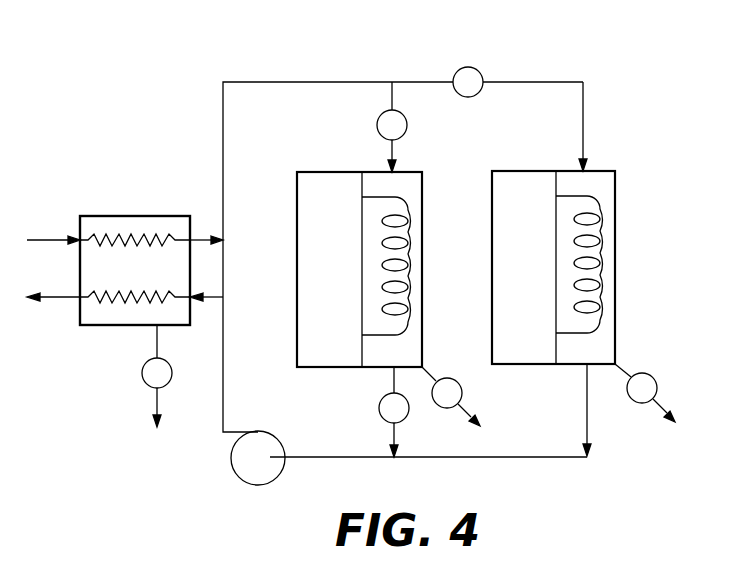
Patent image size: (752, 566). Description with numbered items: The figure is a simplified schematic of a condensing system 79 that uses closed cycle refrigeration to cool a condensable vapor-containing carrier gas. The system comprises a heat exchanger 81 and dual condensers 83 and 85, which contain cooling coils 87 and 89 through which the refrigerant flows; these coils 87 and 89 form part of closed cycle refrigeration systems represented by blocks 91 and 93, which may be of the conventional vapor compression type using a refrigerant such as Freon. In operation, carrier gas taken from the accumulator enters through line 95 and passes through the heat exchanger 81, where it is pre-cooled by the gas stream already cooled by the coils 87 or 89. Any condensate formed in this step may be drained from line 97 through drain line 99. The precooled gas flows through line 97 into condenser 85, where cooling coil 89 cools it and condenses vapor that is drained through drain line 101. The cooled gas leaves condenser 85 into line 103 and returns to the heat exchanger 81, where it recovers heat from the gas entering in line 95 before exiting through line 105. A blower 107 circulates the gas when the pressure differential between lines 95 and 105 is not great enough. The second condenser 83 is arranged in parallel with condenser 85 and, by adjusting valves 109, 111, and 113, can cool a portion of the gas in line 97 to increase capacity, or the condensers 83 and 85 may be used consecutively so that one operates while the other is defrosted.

The condensing system 79 is at (179, 141).
The heat exchanger 81 is at (139, 215).
The condenser 83 is at (313, 162).
The condenser 85 is at (513, 160).
The cooling coil 87 is at (410, 263).
The cooling coil 89 is at (601, 262).
The closed cycle refrigeration system 91 is at (297, 277).
The closed cycle refrigeration system 93 is at (492, 300).
The line 95 is at (45, 237).
The line 97 is at (530, 80).
The drain line 99 is at (156, 347).
The drain line 101 is at (666, 407).
The line 103 is at (226, 383).
The line 105 is at (52, 313).
The blower 107 is at (248, 485).
The valve 109 is at (406, 128).
The valve 111 is at (468, 65).
The valve 113 is at (379, 413).